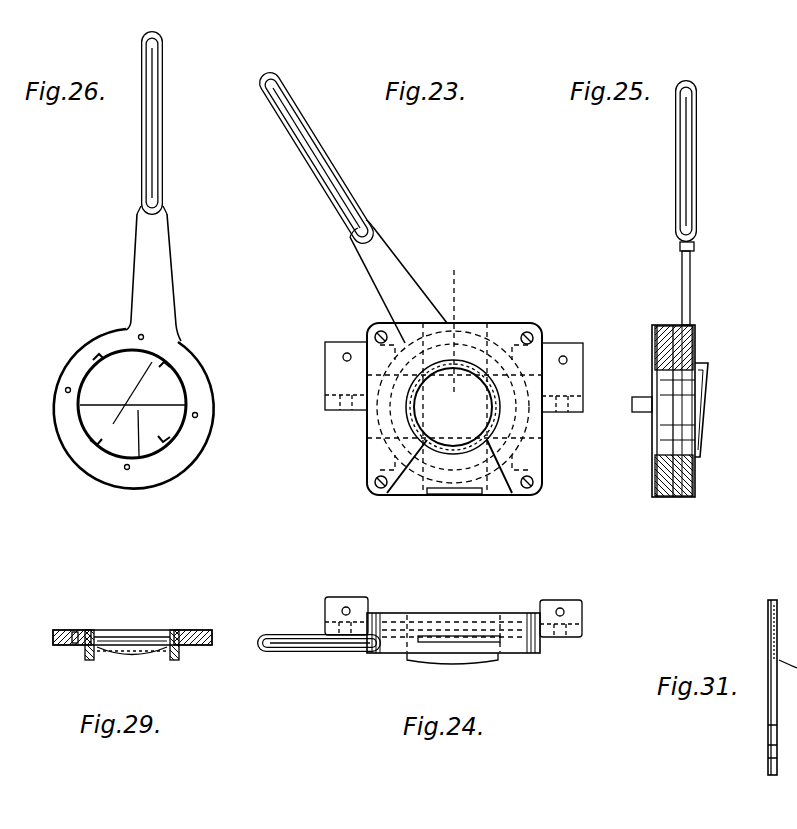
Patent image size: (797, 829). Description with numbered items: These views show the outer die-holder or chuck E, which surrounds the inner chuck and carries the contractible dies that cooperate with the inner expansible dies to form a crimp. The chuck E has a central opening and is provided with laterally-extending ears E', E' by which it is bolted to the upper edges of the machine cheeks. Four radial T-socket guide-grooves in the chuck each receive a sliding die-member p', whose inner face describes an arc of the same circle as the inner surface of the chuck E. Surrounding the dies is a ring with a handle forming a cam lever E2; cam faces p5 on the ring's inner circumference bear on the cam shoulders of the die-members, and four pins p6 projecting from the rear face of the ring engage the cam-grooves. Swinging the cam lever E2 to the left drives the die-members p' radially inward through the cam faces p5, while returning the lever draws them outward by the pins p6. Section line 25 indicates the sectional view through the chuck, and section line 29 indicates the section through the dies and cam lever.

In FIG. 23, the die-holder or chuck E is at (454, 389).
In FIG. 24, the die-holder or chuck E is at (453, 622).
In FIG. 23, the laterally-extending ears E' is at (432, 398).
In FIG. 25, the laterally-extending ears E' is at (608, 426).
In FIG. 24, the laterally-extending ears E' is at (453, 612).
In FIG. 26, the cam lever E2 is at (152, 279).
In FIG. 23, the cam lever E2 is at (362, 258).
In FIG. 25, the cam lever E2 is at (682, 278).
In FIG. 29, the cam lever E2 is at (52, 641).
In FIG. 24, the cam lever E2 is at (318, 647).
In FIG. 26, the cam faces p5 is at (132, 404).
In FIG. 26, the pins p6 is at (138, 337).
In FIG. 29, the pins p6 is at (75, 630).
In FIG. 29, the die-member p' is at (132, 659).
In FIG. 23, the section line 25 is at (478, 278).
In FIG. 25, the section line 29 is at (680, 405).